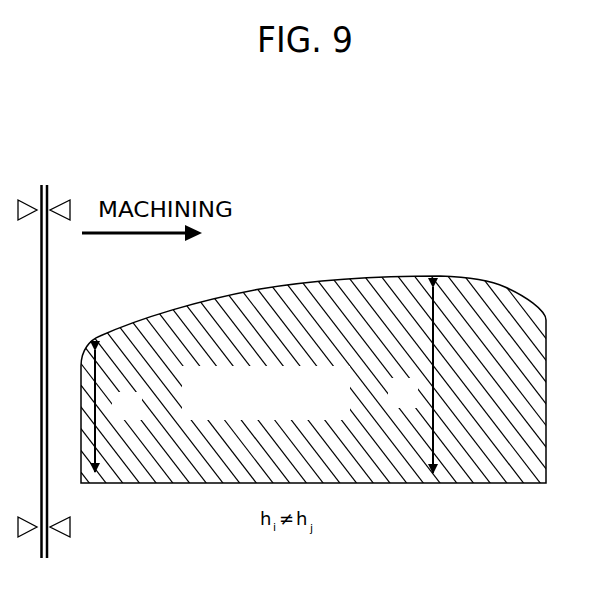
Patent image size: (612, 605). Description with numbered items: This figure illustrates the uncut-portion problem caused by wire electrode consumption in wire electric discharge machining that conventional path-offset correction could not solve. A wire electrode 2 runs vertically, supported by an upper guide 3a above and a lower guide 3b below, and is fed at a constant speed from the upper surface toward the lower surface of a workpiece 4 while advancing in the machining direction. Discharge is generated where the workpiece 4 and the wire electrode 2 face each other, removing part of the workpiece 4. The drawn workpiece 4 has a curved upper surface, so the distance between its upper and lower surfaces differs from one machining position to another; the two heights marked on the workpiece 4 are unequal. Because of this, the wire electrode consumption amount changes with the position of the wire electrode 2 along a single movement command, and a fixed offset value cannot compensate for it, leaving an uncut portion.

The wire electrode 2 is at (49, 291).
The upper guide 3a is at (69, 206).
The lower guide 3b is at (70, 527).
The workpiece 4 is at (327, 277).